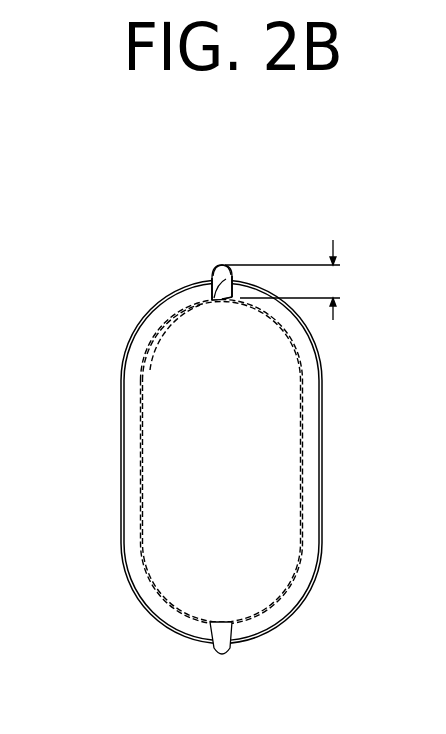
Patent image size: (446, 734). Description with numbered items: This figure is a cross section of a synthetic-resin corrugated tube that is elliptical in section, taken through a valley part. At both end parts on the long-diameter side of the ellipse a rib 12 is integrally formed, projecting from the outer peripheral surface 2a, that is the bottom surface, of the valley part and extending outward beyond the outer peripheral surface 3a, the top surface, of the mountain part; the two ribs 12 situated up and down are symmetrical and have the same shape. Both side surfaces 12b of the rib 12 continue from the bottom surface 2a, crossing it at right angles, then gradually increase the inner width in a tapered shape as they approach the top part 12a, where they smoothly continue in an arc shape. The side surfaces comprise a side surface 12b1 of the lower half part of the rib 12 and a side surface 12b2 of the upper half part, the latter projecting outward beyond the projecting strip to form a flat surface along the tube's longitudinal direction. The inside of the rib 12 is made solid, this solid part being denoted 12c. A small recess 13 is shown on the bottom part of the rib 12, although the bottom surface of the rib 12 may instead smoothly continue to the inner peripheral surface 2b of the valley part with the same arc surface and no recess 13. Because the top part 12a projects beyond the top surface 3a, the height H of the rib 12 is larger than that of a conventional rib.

The outer peripheral surface of the valley part 2a is at (170, 318).
The inner peripheral surface of the valley part 2b is at (213, 297).
The outer peripheral surface of the mountain part 3a is at (130, 337).
The rib 12 is at (240, 273).
The top part of the rib 12a is at (223, 265).
The side surfaces of the rib 12b is at (207, 196).
The side surface of the lower half part of the rib 12b1 is at (184, 288).
The side surface of the upper half part of the rib 12b2 is at (212, 278).
The solid part 12c is at (217, 303).
The recess 13 is at (227, 298).
The height of the rib H is at (292, 280).